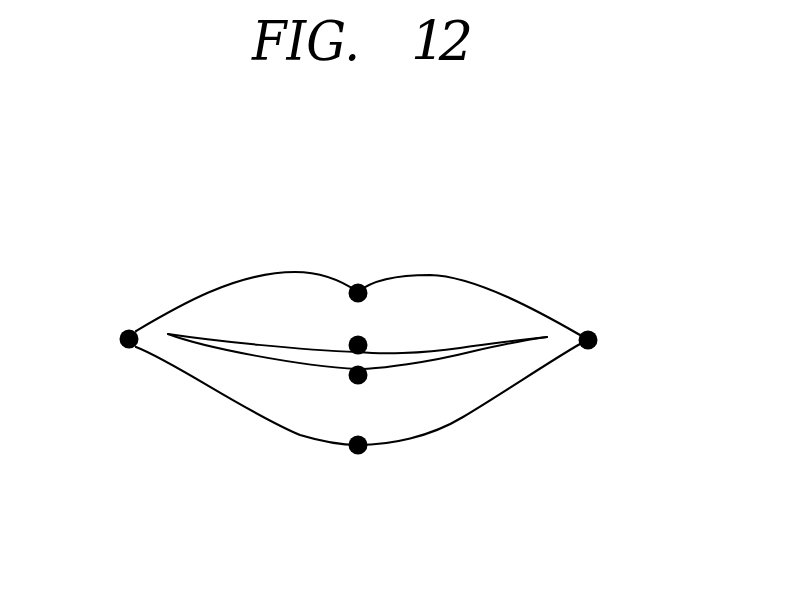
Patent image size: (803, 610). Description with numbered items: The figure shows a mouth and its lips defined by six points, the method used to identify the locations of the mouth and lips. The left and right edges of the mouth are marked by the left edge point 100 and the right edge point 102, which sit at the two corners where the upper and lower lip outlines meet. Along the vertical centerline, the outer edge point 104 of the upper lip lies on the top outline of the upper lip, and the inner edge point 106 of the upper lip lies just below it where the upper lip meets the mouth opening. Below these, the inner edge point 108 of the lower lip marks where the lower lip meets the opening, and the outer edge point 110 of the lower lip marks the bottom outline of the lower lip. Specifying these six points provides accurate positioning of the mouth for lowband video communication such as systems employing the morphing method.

The left edge point of the mouth 100 is at (119, 336).
The right edge point of the mouth 102 is at (597, 338).
The outer edge point of the upper lip 104 is at (362, 289).
The inner edge point of the upper lip 106 is at (366, 341).
The inner edge point of the lower lip 108 is at (363, 381).
The outer edge point of the lower lip 110 is at (357, 453).